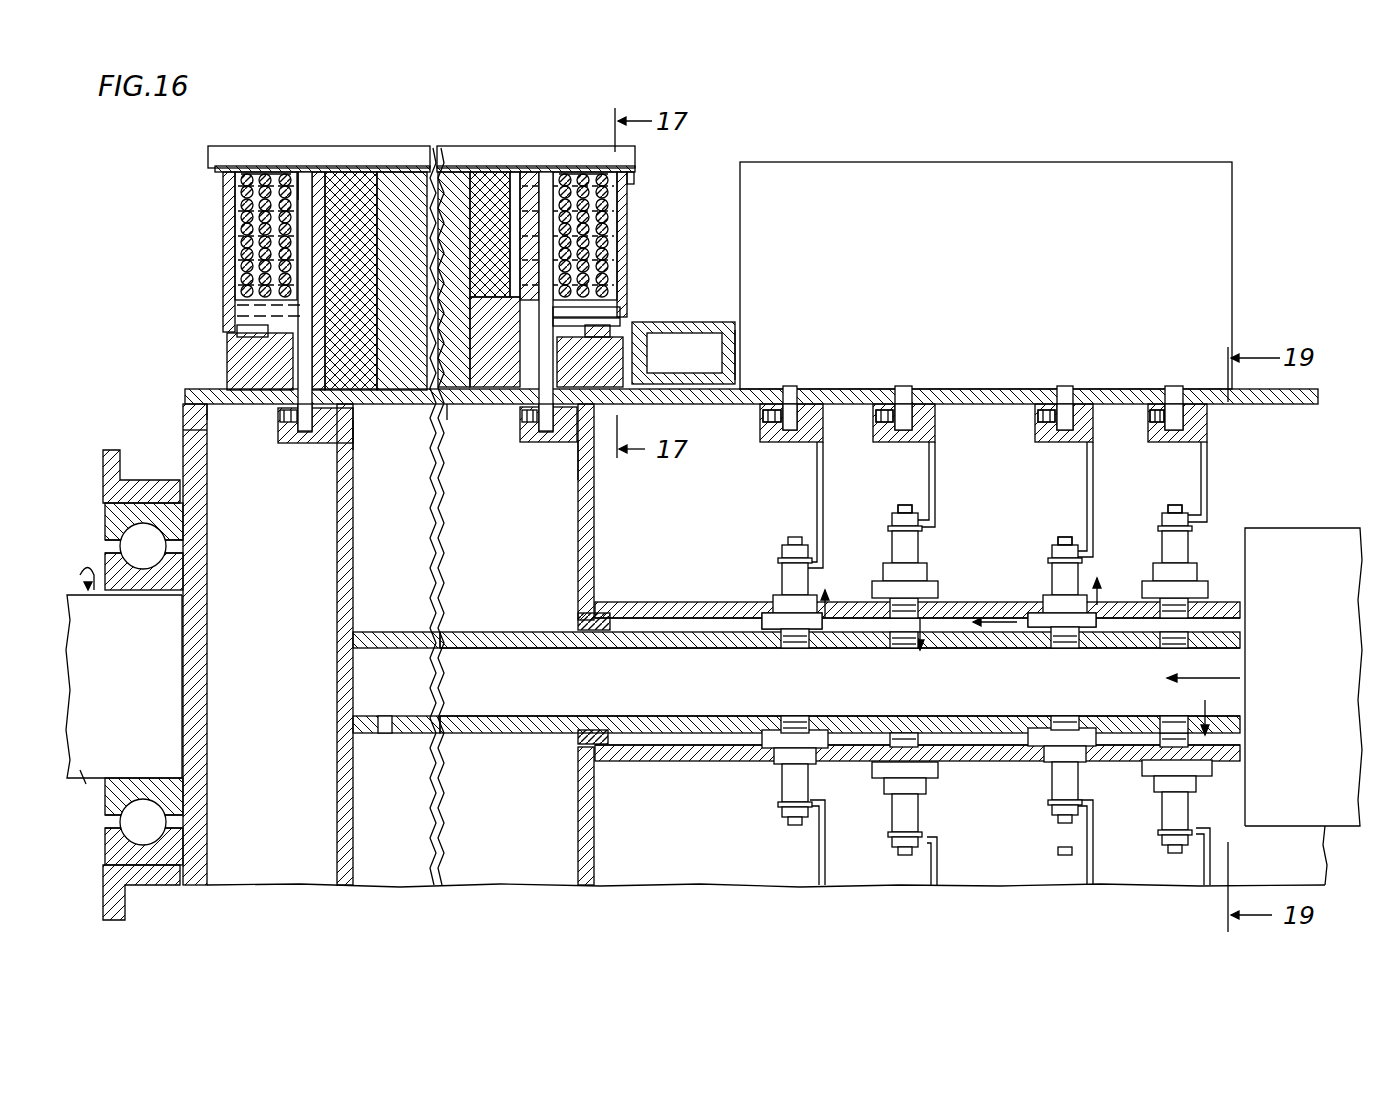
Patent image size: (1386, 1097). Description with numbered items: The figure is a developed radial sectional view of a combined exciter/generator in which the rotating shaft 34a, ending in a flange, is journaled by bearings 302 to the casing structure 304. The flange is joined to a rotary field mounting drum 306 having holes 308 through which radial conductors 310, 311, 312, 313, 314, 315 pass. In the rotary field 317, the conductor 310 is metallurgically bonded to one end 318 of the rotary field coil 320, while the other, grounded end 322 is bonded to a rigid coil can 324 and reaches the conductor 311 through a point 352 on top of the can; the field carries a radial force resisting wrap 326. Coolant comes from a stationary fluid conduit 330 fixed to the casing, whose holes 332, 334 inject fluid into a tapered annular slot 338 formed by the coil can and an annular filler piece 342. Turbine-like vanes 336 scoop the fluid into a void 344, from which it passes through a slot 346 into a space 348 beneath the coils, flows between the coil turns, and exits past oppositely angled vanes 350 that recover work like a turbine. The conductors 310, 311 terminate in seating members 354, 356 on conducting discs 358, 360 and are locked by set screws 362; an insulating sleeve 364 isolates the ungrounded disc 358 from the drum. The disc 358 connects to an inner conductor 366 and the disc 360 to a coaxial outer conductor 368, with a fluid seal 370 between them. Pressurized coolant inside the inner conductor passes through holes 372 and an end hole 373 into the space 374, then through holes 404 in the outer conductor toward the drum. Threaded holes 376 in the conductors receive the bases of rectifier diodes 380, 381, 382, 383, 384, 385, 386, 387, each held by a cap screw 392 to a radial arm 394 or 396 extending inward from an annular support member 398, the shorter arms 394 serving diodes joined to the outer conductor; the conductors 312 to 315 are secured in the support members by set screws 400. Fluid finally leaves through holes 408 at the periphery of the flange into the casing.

The bearings 302 is at (107, 516).
The casing structure 304 is at (110, 448).
The rotary field mounting drum 306 is at (207, 390).
The holes 308 is at (790, 388).
The radial conductor 310 is at (306, 442).
The radial conductor 311 is at (546, 442).
The radial conductor 312 is at (789, 444).
The radial conductor 313 is at (896, 442).
The radial conductor 314 is at (1064, 442).
The radial conductor 315 is at (1180, 442).
The rotary field 317 is at (222, 236).
The end of rotary field coil 318 is at (308, 180).
The rotary field coil 320 is at (264, 182).
The grounded end of field coil 322 is at (235, 278).
The rigid coil can 324 is at (630, 212).
The radial force resisting wrap 326 is at (445, 148).
The stationary fluid conduit 330 is at (718, 322).
The holes 332 is at (684, 353).
The holes 334 is at (738, 342).
The turbine-like vanes 336 is at (616, 322).
The tapered annular slot 338 is at (618, 332).
The annular filler piece 342 is at (584, 412).
The void 344 is at (482, 414).
The slot 346 is at (612, 308).
The space beneath coils 348 is at (610, 286).
The vanes 350 is at (228, 338).
The point on coil can 352 is at (522, 170).
The seating member 354 is at (288, 443).
The seating member 356 is at (582, 464).
The conducting disc 358 is at (353, 504).
The conducting disc 360 is at (595, 524).
The set screws 362 is at (279, 428).
The insulating sleeve 364 is at (354, 435).
The inner conductor 366 is at (380, 632).
The outer conductor 368 is at (642, 612).
The fluid seal 370 is at (578, 620).
The holes 372 is at (686, 656).
The hole 373 is at (393, 734).
The space 374 is at (609, 610).
The threaded holes 376 is at (802, 650).
The rectifier diode 380 is at (1190, 558).
The rectifier diode 381 is at (1078, 576).
The rectifier diode 382 is at (918, 552).
The rectifier diode 383 is at (810, 564).
The rectifier diode 384 is at (1162, 818).
The rectifier diode 385 is at (1074, 782).
The rectifier diode 386 is at (918, 814).
The rectifier diode 387 is at (803, 786).
The cap screw 392 is at (902, 508).
The radial arm 394 is at (936, 470).
The radial arm 396 is at (816, 510).
The annular support member 398 is at (778, 446).
The set screws 400 is at (762, 424).
The holes 404 is at (764, 610).
The holes 408 is at (183, 432).
The rotating shaft 34a is at (130, 668).